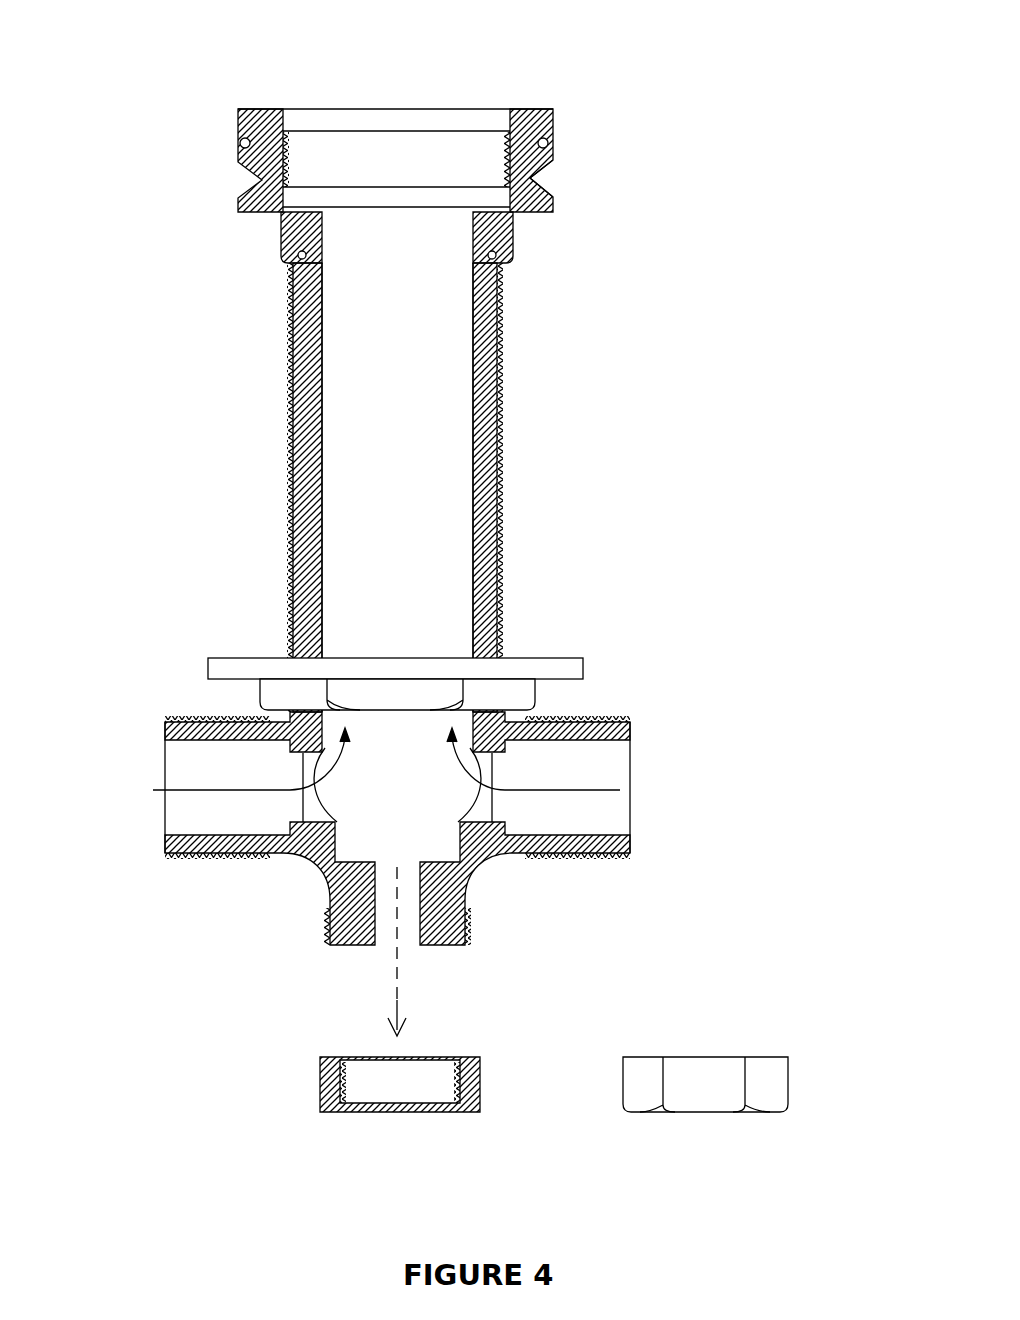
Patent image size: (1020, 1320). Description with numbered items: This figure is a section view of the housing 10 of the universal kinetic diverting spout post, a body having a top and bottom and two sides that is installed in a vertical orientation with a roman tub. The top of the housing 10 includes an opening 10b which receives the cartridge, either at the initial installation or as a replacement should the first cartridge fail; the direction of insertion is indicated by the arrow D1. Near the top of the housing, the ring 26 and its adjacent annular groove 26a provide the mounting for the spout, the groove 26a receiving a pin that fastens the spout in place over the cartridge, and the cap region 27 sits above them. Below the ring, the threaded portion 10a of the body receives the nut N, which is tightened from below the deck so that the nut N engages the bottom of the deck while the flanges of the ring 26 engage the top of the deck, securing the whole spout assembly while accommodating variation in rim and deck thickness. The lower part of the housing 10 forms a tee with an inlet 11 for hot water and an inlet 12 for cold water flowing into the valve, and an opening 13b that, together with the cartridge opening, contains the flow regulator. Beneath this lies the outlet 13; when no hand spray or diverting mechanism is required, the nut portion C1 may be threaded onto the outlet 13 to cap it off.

The direction of insertion D1 is at (396, 80).
The cap nut 27 is at (548, 142).
The annular groove 26a is at (538, 180).
The ring 26 is at (553, 205).
The housing 10 is at (538, 487).
The threaded portion 10a is at (502, 507).
The opening 10b is at (440, 445).
The nut N is at (565, 666).
The inlet 11 is at (429, 854).
The inlet 12 is at (188, 720).
The outlet 13 is at (440, 940).
The opening 13b is at (386, 790).
The nut portion C1 is at (480, 1073).